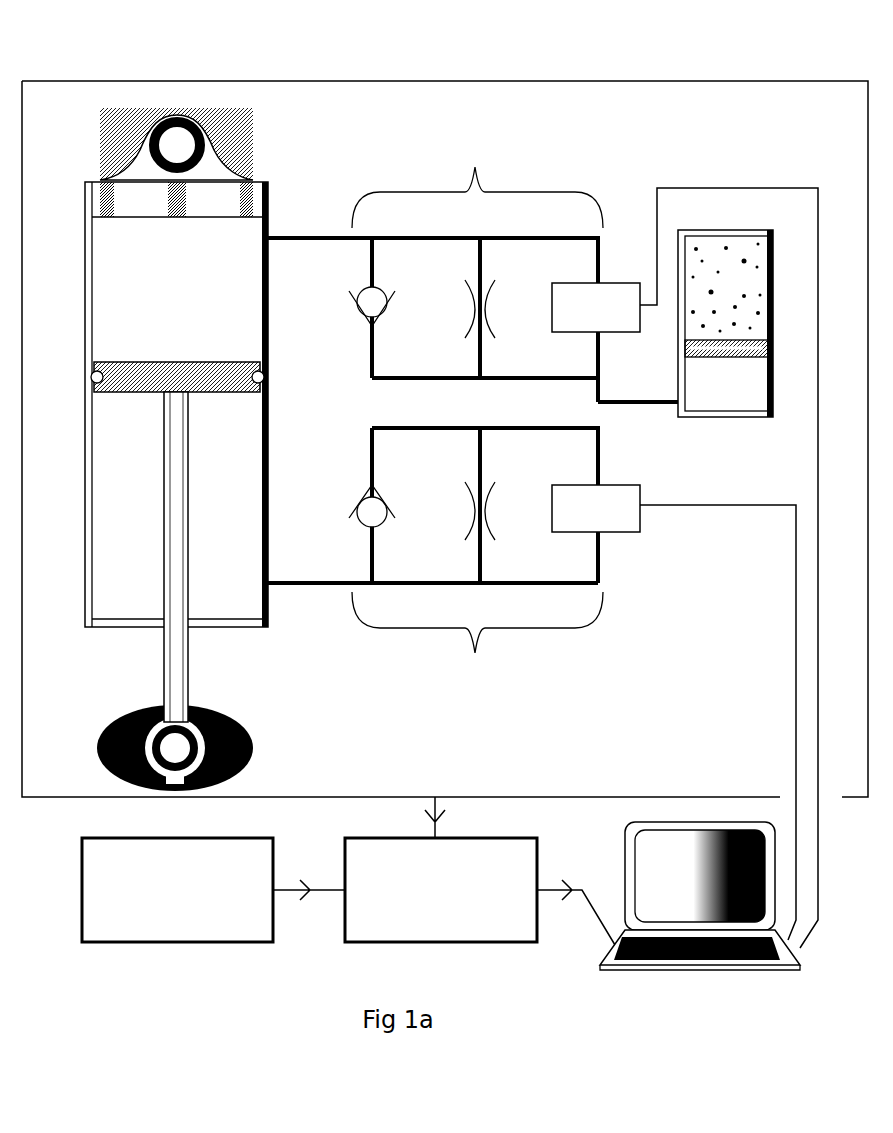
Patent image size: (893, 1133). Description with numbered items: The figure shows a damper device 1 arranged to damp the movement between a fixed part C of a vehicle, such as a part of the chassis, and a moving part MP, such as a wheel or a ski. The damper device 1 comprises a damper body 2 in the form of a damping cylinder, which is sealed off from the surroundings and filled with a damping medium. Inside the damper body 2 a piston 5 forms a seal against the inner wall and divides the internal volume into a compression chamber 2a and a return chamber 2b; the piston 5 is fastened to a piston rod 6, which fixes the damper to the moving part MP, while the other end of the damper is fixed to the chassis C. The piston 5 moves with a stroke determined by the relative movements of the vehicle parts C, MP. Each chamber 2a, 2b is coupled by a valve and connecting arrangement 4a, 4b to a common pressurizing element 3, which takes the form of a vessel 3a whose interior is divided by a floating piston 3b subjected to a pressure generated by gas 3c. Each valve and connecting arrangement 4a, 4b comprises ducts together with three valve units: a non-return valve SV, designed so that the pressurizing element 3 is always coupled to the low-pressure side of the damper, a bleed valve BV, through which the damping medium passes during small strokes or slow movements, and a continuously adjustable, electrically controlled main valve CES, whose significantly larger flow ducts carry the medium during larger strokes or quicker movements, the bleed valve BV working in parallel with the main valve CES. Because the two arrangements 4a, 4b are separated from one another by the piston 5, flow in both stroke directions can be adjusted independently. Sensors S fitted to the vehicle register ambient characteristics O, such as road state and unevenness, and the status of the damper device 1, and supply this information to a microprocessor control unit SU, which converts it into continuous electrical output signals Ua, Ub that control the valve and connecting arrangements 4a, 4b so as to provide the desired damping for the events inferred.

The damper device 1 is at (294, 92).
The damper body 2 is at (80, 197).
The compression chamber 2a is at (107, 275).
The return chamber 2b is at (97, 488).
The pressurizing element 3 is at (704, 352).
The vessel 3a is at (773, 417).
The floating piston 3b is at (768, 348).
The gas 3c is at (738, 282).
The valve and connecting arrangement 4a is at (435, 267).
The valve and connecting arrangement 4b is at (435, 559).
The piston 5 is at (120, 370).
The piston rod 6 is at (165, 678).
The fixed part C is at (120, 130).
The moving part MP is at (100, 742).
The non-return valve SV is at (389, 407).
The bleed valve BV is at (493, 410).
The main valve CES is at (596, 407).
The ambient characteristics O is at (177, 890).
The sensors S is at (444, 871).
The control unit SU is at (700, 917).
The output signal Ua is at (750, 568).
The output signal Ub is at (718, 722).